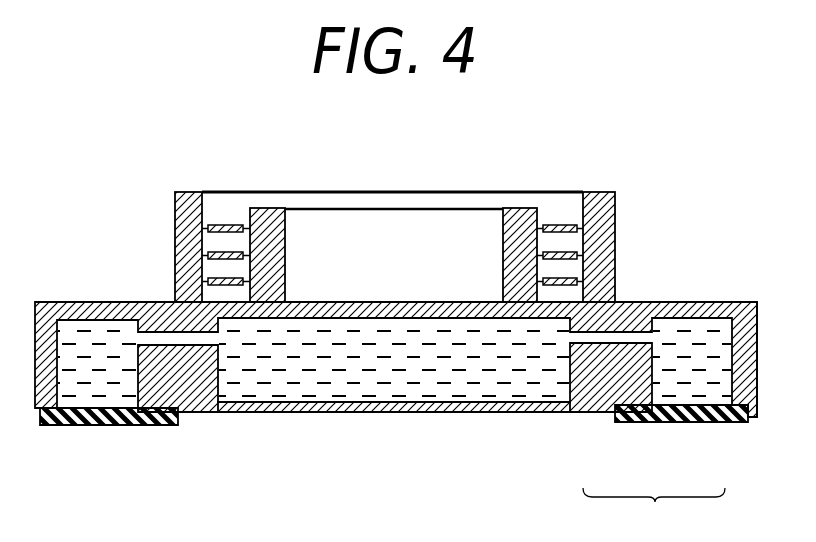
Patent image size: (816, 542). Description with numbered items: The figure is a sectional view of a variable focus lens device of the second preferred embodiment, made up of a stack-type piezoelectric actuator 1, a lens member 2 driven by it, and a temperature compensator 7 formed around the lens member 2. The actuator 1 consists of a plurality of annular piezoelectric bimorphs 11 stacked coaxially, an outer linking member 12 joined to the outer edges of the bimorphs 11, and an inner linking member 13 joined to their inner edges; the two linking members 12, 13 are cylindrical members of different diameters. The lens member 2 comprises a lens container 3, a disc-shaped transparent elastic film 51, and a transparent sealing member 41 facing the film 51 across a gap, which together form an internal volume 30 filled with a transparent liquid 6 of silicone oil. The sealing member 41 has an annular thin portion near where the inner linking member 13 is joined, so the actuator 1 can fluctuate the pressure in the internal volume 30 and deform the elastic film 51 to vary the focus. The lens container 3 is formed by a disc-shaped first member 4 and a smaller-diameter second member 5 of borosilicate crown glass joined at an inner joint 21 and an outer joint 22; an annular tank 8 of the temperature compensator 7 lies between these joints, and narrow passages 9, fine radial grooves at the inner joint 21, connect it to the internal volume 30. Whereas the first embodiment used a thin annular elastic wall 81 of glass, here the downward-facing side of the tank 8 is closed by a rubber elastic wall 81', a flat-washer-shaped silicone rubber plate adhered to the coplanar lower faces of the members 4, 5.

The stack-type piezoelectric actuator 1 is at (622, 220).
The annular piezoelectric bimorphs 11 is at (224, 226).
The outer linking member 12 is at (175, 233).
The inner linking member 13 is at (285, 242).
The transparent sealing member 41 is at (417, 300).
The lens member 2 is at (478, 425).
The inner joint 21 is at (632, 292).
The outer joint 22 is at (743, 292).
The lens container 3 is at (352, 413).
The internal volume 30 is at (443, 368).
The first member 4 is at (757, 307).
The second member 5 is at (758, 377).
The transparent elastic film 51 is at (292, 402).
The transparent liquid 6 is at (518, 372).
The temperature compensator 7 is at (654, 512).
The tank 8 is at (697, 430).
The annular elastic wall 81 is at (109, 416).
The rubber elastic wall 81' is at (681, 451).
The narrow passages 9 is at (160, 338).